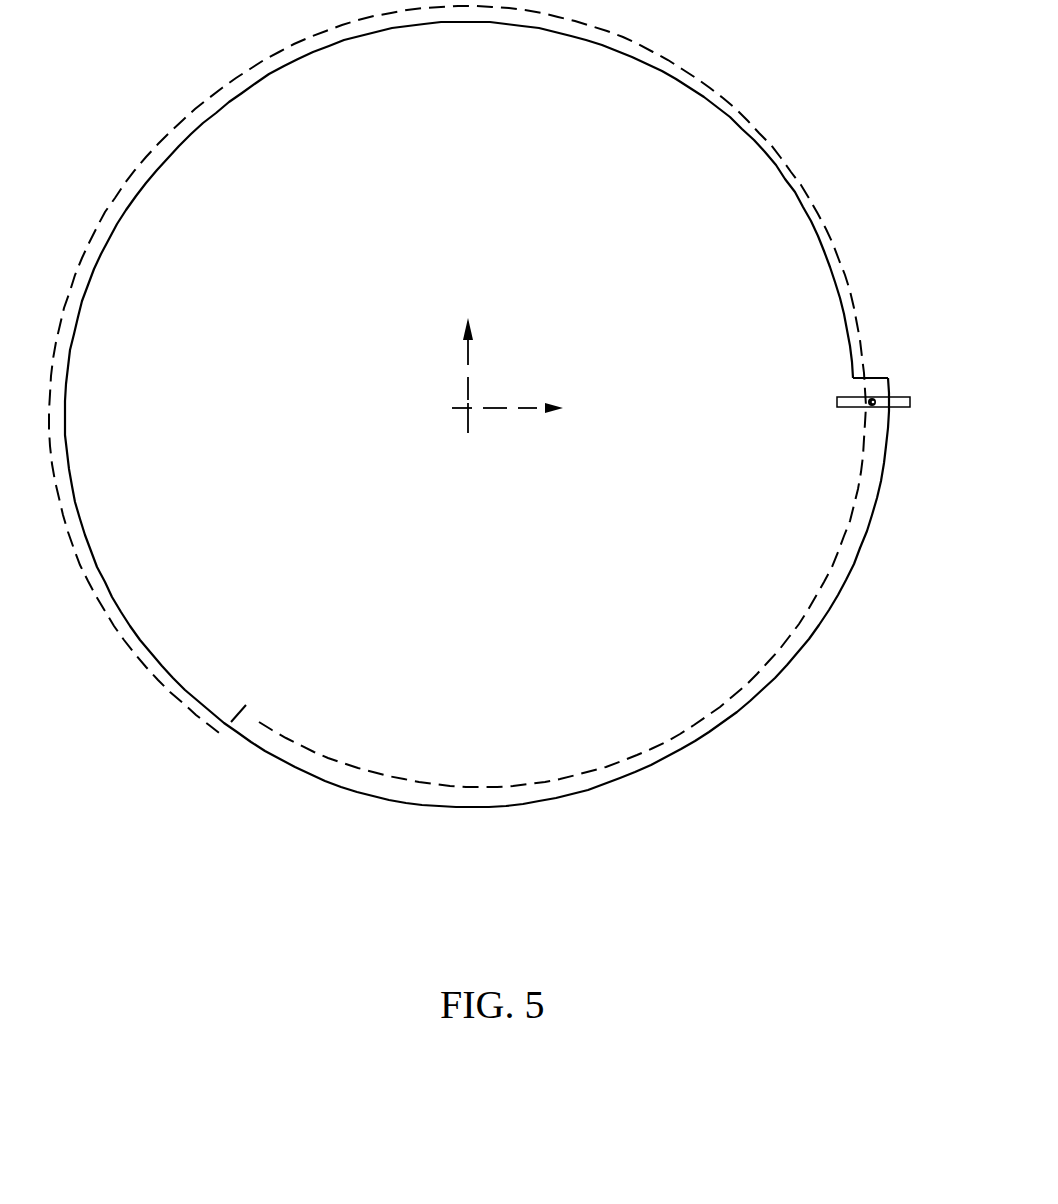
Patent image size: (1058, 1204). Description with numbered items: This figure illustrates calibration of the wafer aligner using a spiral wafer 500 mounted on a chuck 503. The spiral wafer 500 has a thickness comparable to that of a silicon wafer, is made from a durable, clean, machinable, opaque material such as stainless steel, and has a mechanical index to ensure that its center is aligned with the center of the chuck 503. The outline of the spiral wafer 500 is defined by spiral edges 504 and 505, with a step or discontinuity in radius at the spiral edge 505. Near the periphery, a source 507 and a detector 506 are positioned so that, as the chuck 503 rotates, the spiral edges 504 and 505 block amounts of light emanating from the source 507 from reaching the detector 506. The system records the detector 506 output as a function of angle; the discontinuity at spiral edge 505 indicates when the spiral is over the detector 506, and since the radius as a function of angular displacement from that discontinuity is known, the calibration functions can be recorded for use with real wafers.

The spiral wafer 500 is at (848, 344).
The chuck 503 is at (468, 408).
The spiral edge 504 is at (252, 718).
The spiral edge 505 is at (879, 377).
The detector 506 is at (837, 400).
The source 507 is at (867, 407).